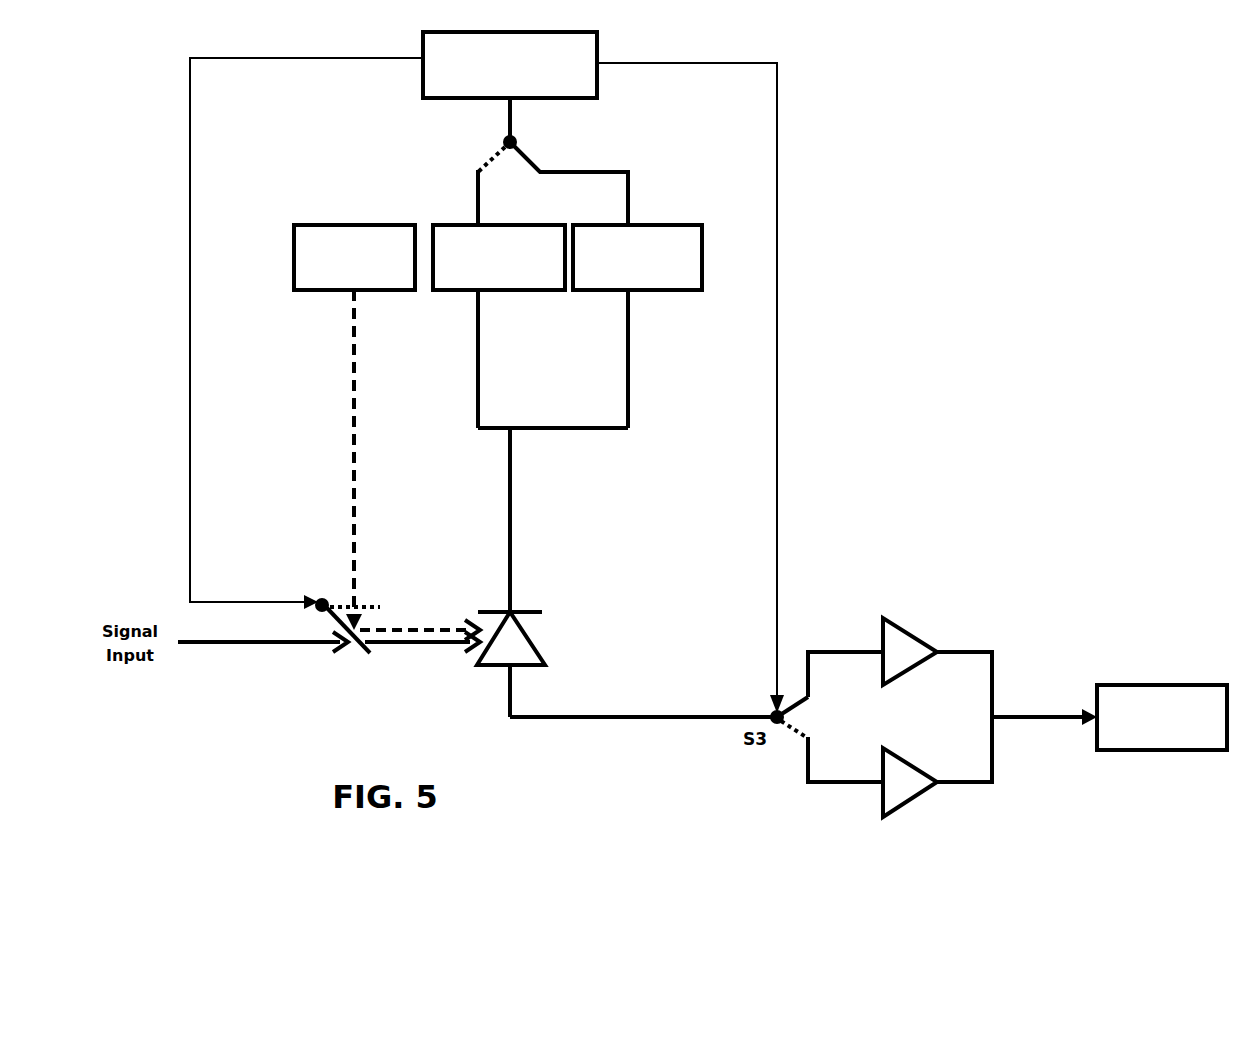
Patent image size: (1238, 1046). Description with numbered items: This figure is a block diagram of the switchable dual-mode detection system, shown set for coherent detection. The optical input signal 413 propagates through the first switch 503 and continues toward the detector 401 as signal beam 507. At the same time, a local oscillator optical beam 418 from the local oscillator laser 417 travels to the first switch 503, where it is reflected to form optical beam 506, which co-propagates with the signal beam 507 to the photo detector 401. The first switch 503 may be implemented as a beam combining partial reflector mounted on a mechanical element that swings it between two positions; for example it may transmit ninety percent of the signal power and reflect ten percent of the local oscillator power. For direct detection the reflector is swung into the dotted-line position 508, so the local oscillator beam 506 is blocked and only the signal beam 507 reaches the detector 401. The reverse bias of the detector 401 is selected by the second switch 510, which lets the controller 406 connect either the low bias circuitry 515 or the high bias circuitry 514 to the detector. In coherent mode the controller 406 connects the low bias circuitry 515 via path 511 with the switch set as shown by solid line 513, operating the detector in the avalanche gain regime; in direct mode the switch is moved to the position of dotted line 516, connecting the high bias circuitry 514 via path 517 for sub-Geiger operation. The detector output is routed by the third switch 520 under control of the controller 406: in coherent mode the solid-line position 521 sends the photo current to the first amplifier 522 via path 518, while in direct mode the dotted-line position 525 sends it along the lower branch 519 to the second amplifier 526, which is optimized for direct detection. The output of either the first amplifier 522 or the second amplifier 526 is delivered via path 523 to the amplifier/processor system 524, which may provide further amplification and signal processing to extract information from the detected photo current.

The controller 406 is at (423, 55).
The switch S1 503 is at (306, 333).
The switch S3 520 is at (690, 388).
The switch S2 510 is at (512, 124).
The dotted line position of switch S2 516 is at (464, 159).
The solid line position of switch S2 513 is at (554, 156).
The local oscillator laser 417 is at (344, 225).
The high bias circuitry 514 is at (473, 224).
The low bias circuitry 515 is at (639, 224).
The path 517 is at (477, 353).
The path 511 is at (629, 353).
The local oscillator optical beam 418 is at (353, 433).
The direct detection position of partial reflector 508 is at (383, 596).
The optical input signal 413 is at (246, 644).
The signal beam 507 is at (408, 643).
The optical beam 506 is at (408, 628).
The detector 401 is at (497, 665).
The solid line position of switch S3 521 is at (818, 709).
The dotted line position of switch S3 525 is at (788, 751).
The path 518 is at (866, 651).
The path to amplifier A2 519 is at (866, 784).
The first amplifier A1 522 is at (905, 630).
The second amplifier A2 526 is at (910, 762).
The path 523 is at (1050, 717).
The amplifier/processor system 524 is at (1140, 684).